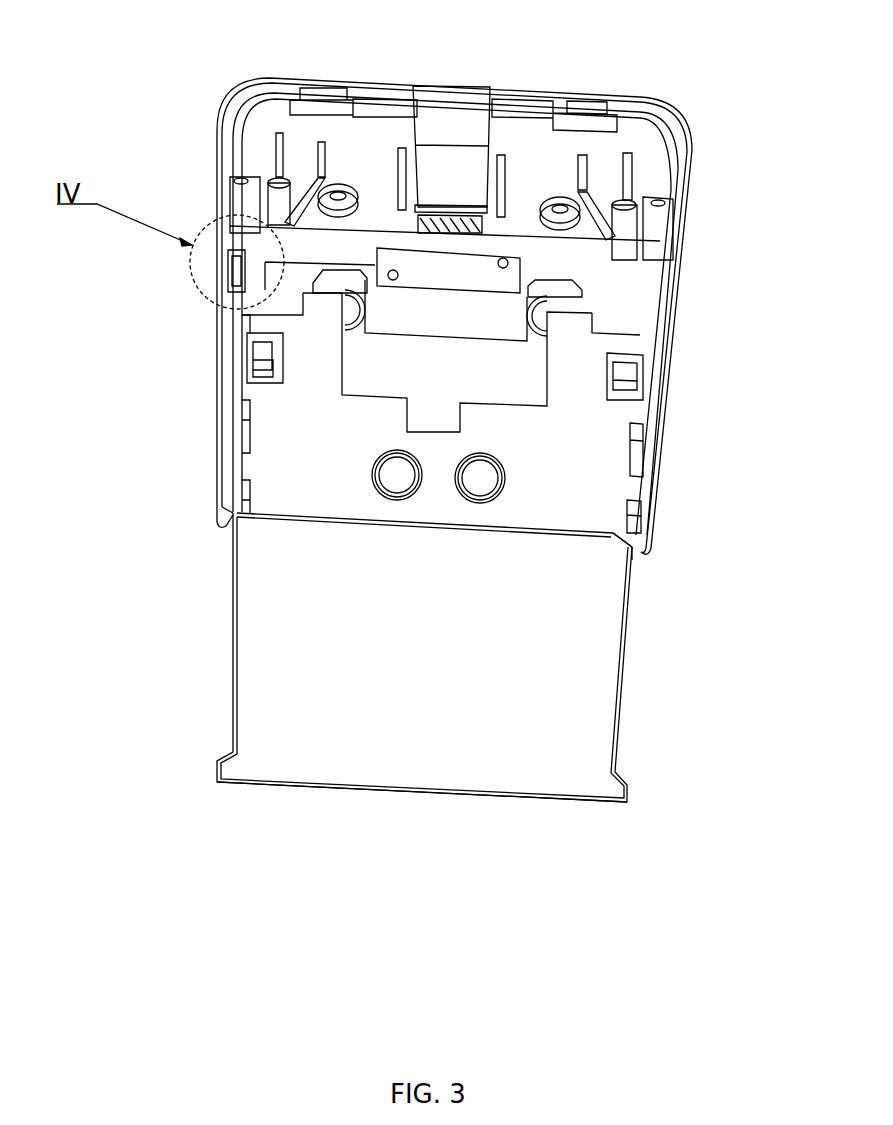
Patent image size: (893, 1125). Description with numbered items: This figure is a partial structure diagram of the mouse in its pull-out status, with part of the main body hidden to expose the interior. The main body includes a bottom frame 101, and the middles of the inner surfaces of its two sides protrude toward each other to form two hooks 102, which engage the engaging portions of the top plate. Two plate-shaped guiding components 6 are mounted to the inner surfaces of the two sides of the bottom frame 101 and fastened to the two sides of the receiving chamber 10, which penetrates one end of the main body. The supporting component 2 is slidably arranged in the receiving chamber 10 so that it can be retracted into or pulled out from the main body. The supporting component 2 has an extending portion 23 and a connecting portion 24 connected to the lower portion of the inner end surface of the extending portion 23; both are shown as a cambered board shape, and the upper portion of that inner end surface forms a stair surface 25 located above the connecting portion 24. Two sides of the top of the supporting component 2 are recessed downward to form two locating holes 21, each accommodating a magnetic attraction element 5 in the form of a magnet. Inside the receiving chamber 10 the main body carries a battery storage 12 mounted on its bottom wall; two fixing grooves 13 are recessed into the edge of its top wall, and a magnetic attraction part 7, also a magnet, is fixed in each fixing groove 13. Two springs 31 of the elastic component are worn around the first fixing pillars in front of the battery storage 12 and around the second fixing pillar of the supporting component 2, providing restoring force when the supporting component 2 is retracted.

The supporting component 2 is at (460, 639).
The magnetic attraction element 5 is at (478, 478).
The guiding component 6 is at (247, 317).
The magnetic attraction part 7 is at (580, 292).
The receiving chamber 10 is at (452, 382).
The battery storage 12 is at (452, 330).
The fixing groove 13 is at (356, 282).
The locating hole 21 is at (373, 470).
The extending portion 23 is at (395, 768).
The connecting portion 24 is at (578, 470).
The stair surface 25 is at (620, 543).
The spring 31 is at (247, 353).
The bottom frame 101 is at (238, 228).
The hook 102 is at (243, 278).